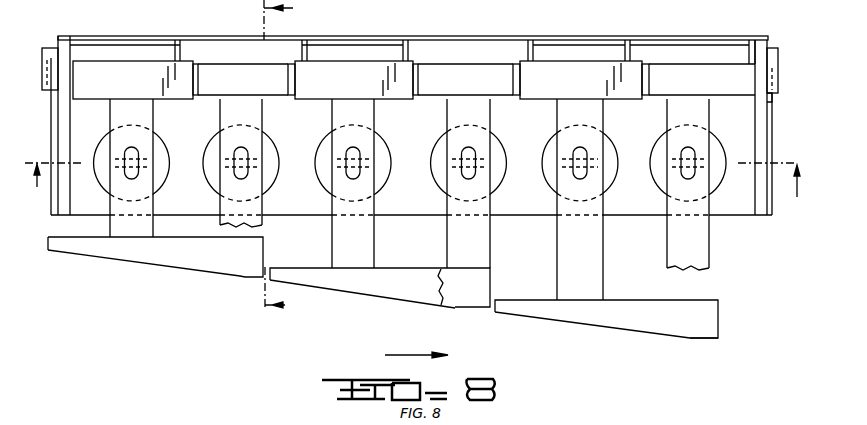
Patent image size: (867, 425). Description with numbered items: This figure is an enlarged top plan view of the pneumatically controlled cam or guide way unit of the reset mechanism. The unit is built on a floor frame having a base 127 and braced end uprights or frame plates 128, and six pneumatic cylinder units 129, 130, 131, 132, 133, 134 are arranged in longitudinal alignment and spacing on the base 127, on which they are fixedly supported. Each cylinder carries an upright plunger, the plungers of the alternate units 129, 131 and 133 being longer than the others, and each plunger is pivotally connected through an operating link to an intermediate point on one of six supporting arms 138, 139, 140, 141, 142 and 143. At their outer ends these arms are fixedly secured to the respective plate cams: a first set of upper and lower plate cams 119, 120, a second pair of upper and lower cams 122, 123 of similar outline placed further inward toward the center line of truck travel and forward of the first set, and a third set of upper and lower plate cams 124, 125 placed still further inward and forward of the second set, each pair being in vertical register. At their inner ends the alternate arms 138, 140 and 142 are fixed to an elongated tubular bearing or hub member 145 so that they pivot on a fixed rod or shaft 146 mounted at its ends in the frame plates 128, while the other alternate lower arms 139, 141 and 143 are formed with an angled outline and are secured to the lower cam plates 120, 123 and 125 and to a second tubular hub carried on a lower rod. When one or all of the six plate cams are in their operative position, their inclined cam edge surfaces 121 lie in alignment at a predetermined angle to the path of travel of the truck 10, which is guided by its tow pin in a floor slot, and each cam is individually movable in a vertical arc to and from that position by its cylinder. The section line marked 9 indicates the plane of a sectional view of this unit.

The base 127 is at (728, 43).
The tubular bearing or hub member 145 is at (411, 69).
The end uprights 128 is at (67, 56).
The fixed rod or shaft 146 is at (43, 66).
The supporting arm 138 is at (120, 222).
The supporting arm 139 is at (255, 207).
The supporting arm 140 is at (371, 253).
The supporting arm 141 is at (490, 255).
The supporting arm 142 is at (597, 263).
The supporting arm 143 is at (702, 245).
The pneumatic cylinder unit 129 is at (160, 152).
The pneumatic cylinder unit 130 is at (271, 148).
The pneumatic cylinder unit 131 is at (386, 150).
The pneumatic cylinder unit 132 is at (483, 150).
The pneumatic cylinder unit 133 is at (613, 149).
The pneumatic cylinder unit 134 is at (712, 146).
The upper plate cam 119 is at (210, 265).
The lower plate cam 120 is at (120, 260).
The inclined edges 121 is at (161, 262).
The upper cam 122 is at (426, 293).
The lower cam 123 is at (452, 306).
The upper plate cam 124 is at (665, 325).
The lower plate cam 125 is at (696, 340).
The truck 10 is at (293, 161).
The section line 9- 9 is at (412, 191).